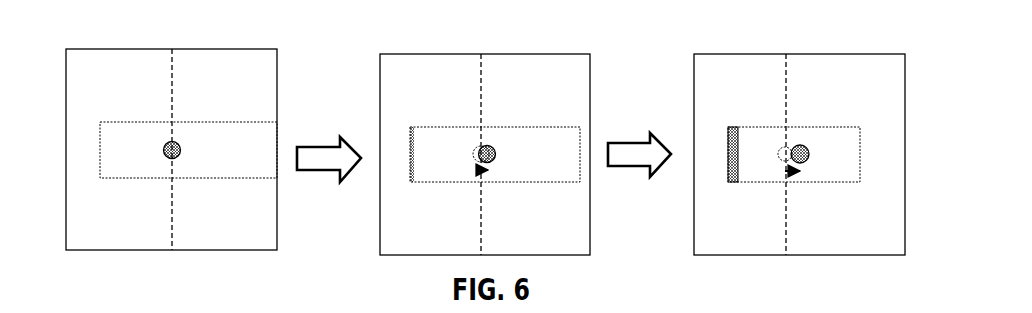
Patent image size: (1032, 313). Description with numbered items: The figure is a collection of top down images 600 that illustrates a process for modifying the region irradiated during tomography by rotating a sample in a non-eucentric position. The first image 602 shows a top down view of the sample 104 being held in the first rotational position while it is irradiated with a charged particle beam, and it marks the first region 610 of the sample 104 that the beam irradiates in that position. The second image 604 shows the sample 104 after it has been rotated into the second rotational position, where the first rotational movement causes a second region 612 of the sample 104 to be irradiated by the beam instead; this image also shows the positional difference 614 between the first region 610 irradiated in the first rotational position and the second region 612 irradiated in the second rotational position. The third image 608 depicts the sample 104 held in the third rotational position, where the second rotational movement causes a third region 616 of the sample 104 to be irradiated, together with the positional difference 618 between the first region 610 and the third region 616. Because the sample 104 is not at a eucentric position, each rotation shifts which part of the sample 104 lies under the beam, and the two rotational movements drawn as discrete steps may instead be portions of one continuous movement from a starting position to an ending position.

The collection of top down images 600 is at (95, 25).
The image 602 is at (265, 36).
The image 604 is at (585, 34).
The image 608 is at (898, 34).
The sample 104 is at (133, 122).
The first region 610 is at (178, 144).
The second region 612 is at (492, 148).
The positional difference 614 is at (490, 175).
The third region 616 is at (806, 146).
The positional difference 618 is at (791, 176).